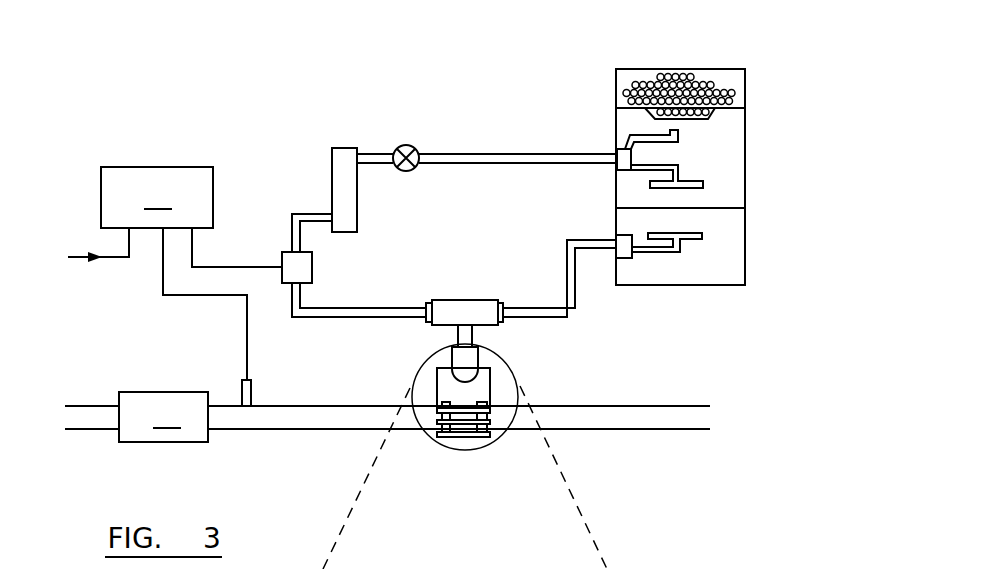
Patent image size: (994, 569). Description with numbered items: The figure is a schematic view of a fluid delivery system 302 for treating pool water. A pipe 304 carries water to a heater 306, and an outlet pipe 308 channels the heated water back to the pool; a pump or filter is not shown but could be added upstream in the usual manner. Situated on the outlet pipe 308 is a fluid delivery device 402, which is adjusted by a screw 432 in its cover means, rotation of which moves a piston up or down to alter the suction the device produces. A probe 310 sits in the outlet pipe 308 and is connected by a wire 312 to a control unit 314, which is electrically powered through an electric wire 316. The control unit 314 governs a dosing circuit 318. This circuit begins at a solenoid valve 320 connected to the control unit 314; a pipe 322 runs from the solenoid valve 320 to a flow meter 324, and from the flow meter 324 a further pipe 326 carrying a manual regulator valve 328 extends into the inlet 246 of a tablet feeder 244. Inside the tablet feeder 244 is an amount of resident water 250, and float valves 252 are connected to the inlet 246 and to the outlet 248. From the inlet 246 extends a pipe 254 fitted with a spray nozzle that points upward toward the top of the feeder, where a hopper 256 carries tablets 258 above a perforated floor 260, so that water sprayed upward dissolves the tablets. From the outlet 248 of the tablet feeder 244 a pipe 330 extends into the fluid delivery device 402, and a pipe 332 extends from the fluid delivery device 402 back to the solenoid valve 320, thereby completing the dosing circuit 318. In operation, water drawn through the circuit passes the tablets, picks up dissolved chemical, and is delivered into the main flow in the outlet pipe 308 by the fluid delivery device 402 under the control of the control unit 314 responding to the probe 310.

The fluid delivery system 302 is at (346, 100).
The tablet feeder 244 is at (764, 112).
The hopper 256 is at (728, 78).
The tablets 258 is at (663, 78).
The perforated floor 260 is at (706, 120).
The inlet 246 is at (616, 152).
The pipe 254 is at (682, 138).
The float valves 252 is at (703, 184).
The resident water 250 is at (705, 270).
The outlet 248 is at (612, 238).
The pipe 326 is at (472, 154).
The dosing circuit 318 is at (525, 138).
The manual regulator valve 328 is at (405, 145).
The flow meter 324 is at (350, 185).
The pipe 322 is at (307, 217).
The solenoid valve 320 is at (312, 272).
The control unit 314 is at (191, 217).
The electric wire 316 is at (75, 264).
The wire 312 is at (246, 332).
The probe 310 is at (242, 400).
The heater 306 is at (163, 417).
The pipe 304 is at (87, 417).
The outlet pipe 308 is at (277, 417).
The pipe 332 is at (348, 322).
The pipe 330 is at (572, 294).
The fluid delivery device 402 is at (504, 381).
The screw 432 is at (453, 568).